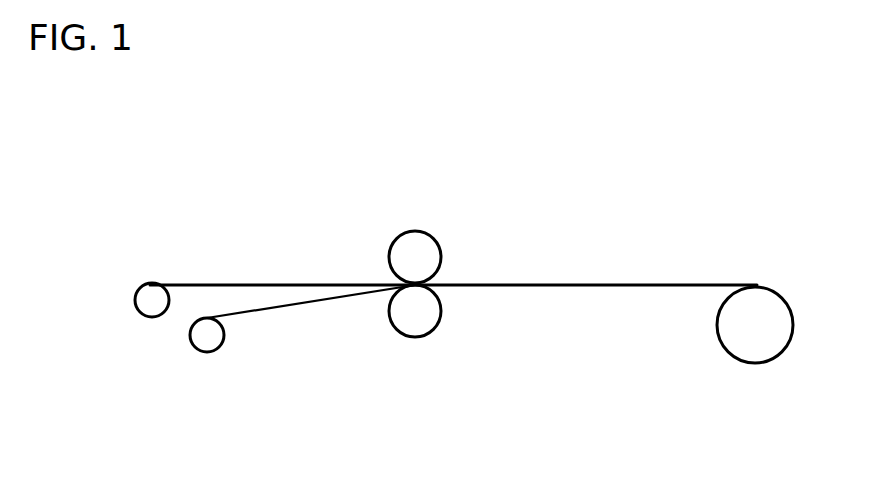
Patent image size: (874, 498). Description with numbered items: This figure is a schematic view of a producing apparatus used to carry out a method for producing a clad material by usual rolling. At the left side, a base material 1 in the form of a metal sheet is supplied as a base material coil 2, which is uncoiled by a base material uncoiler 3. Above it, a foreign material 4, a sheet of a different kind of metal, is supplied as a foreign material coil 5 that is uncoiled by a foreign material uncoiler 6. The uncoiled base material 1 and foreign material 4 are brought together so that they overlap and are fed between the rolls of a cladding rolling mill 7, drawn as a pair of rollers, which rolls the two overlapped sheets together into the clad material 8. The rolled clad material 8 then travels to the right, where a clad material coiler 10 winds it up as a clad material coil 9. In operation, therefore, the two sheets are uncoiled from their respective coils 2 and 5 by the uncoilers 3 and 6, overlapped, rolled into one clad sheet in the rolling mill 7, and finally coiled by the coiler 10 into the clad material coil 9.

The base material 1 is at (303, 305).
The base material coil 2 is at (210, 348).
The base material uncoiler 3 is at (204, 353).
The foreign material 4 is at (240, 285).
The foreign material coil 5 is at (153, 305).
The foreign material uncoiler 6 is at (135, 309).
The cladding rolling mill 7 is at (424, 231).
The clad material 8 is at (615, 284).
The clad material coil 9 is at (745, 350).
The clad material coiler 10 is at (778, 366).